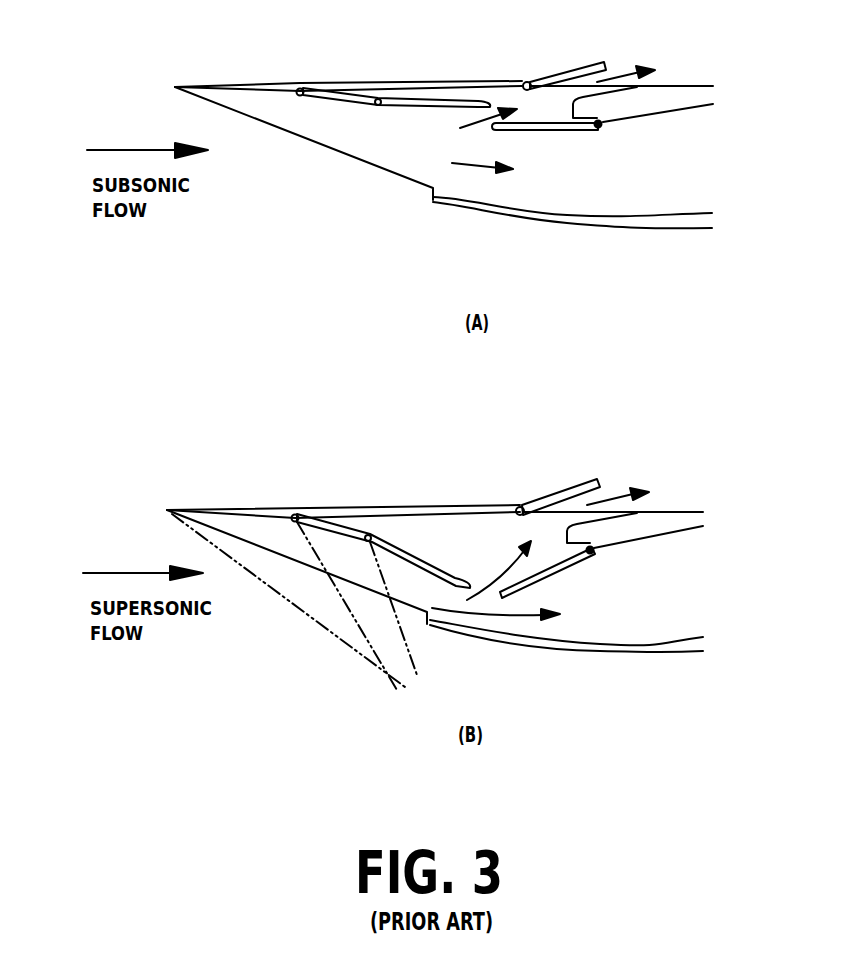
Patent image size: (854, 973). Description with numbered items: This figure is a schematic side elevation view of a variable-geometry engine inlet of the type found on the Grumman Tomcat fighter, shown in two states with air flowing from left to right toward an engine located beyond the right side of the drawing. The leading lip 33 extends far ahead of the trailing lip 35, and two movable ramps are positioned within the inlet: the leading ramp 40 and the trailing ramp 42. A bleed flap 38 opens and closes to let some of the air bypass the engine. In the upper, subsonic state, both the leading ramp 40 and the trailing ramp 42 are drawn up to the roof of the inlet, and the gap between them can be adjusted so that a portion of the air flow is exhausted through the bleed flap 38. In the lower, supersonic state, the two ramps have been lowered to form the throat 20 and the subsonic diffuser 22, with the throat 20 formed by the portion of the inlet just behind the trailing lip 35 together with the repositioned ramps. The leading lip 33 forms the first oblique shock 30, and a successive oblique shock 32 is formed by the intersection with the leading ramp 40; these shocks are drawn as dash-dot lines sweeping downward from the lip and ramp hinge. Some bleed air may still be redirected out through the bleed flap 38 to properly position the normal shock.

The throat 20 is at (498, 622).
The subsonic diffuser 22 is at (653, 605).
The first oblique shock 30 is at (293, 610).
The second oblique shock 32 is at (388, 665).
The leading lip 33 is at (175, 85).
The trailing lip 35 is at (433, 200).
The bleed flap 38 is at (607, 63).
The leading ramp 40 is at (352, 92).
The trailing ramp 42 is at (512, 126).